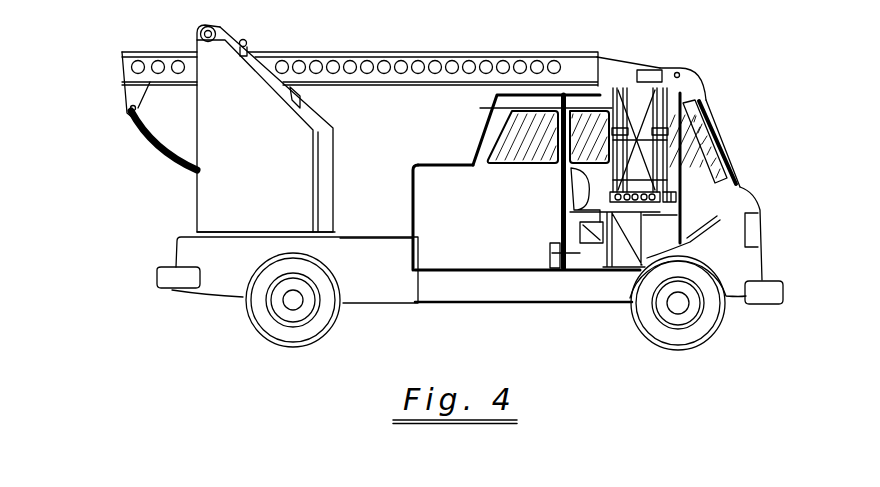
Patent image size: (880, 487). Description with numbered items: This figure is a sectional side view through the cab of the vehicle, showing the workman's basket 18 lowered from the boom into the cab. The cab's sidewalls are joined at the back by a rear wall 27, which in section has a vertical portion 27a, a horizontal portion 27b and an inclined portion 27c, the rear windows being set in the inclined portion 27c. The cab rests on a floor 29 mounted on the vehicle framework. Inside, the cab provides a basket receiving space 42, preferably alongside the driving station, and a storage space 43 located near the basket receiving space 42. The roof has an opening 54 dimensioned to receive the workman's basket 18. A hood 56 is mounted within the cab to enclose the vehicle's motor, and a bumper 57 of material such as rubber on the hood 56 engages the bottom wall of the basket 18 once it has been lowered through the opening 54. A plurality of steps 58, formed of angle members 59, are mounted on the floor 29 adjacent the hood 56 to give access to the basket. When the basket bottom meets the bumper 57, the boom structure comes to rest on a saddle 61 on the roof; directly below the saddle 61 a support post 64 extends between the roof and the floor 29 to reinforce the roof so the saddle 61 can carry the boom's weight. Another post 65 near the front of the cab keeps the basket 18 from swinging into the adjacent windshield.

The workman's basket 18 is at (652, 58).
The rear wall 27 is at (481, 180).
The vertical portion 27a is at (410, 194).
The horizontal portion 27b is at (447, 162).
The inclined portion 27c is at (487, 113).
The floor 29 is at (502, 266).
The basket receiving space 42 is at (670, 182).
The storage space 43 is at (463, 237).
The opening 54 is at (677, 72).
The hood 56 is at (737, 206).
The bumper 57 is at (676, 198).
The steps 58 is at (553, 241).
The angle members 59 is at (552, 253).
The saddle 61 is at (571, 92).
The support post 64 is at (560, 183).
The post 65 is at (678, 116).